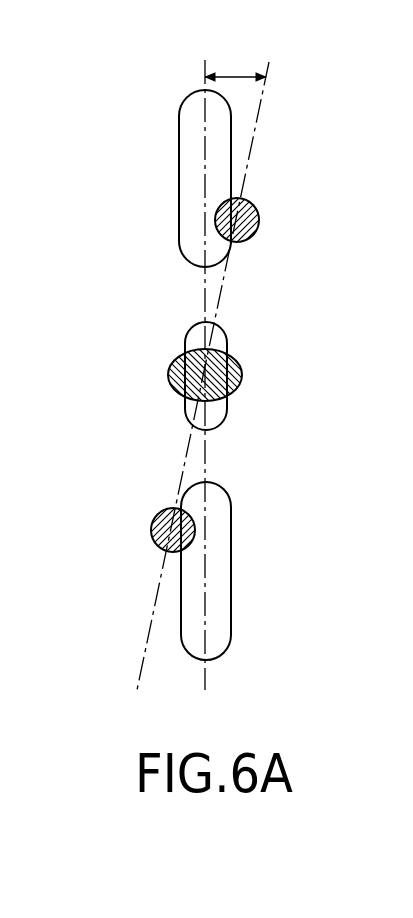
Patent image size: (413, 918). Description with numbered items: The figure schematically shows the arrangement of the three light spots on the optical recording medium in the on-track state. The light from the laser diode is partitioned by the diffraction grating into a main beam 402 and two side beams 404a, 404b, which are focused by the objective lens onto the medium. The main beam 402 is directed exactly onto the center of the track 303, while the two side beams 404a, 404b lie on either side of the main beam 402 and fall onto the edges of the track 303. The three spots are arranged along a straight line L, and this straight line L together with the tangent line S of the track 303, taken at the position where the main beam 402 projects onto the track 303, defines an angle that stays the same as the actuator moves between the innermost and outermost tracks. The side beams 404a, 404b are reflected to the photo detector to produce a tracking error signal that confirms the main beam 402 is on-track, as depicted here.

The track 303 is at (178, 142).
The main beam 402 is at (244, 373).
The side beam 404a is at (260, 220).
The side beam 404b is at (150, 528).
The straight line L is at (182, 463).
The tangent line S is at (207, 453).